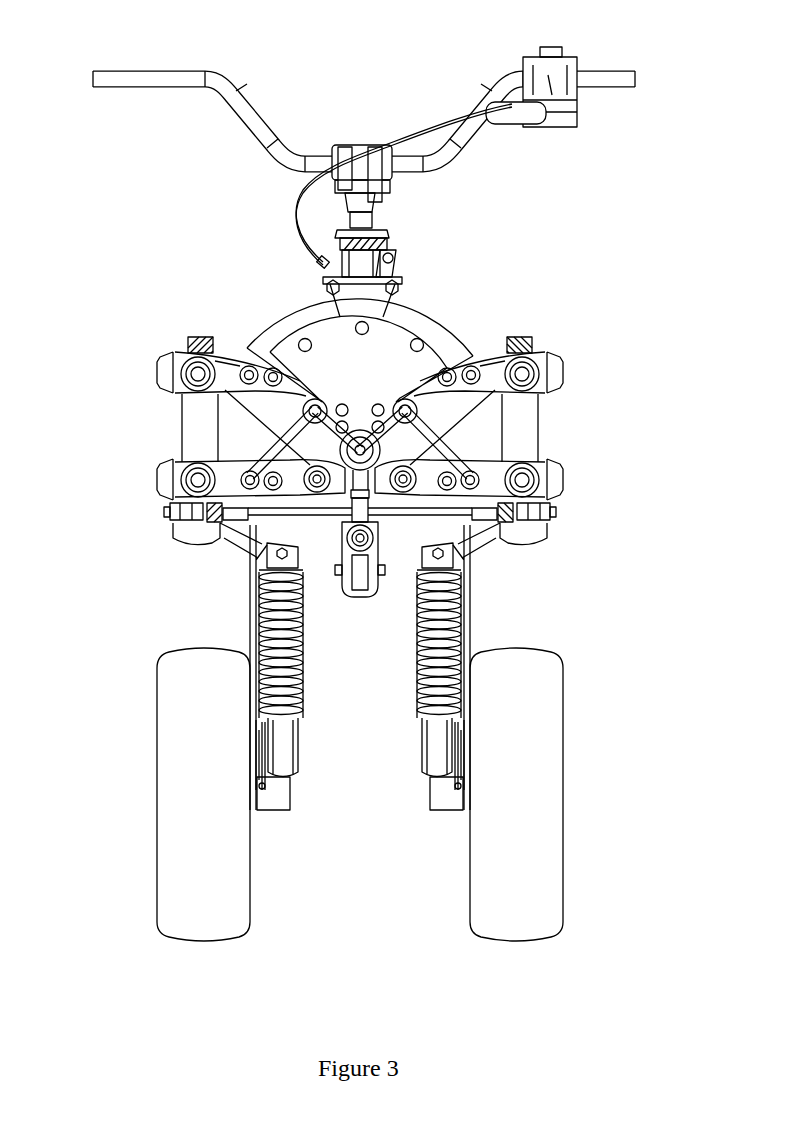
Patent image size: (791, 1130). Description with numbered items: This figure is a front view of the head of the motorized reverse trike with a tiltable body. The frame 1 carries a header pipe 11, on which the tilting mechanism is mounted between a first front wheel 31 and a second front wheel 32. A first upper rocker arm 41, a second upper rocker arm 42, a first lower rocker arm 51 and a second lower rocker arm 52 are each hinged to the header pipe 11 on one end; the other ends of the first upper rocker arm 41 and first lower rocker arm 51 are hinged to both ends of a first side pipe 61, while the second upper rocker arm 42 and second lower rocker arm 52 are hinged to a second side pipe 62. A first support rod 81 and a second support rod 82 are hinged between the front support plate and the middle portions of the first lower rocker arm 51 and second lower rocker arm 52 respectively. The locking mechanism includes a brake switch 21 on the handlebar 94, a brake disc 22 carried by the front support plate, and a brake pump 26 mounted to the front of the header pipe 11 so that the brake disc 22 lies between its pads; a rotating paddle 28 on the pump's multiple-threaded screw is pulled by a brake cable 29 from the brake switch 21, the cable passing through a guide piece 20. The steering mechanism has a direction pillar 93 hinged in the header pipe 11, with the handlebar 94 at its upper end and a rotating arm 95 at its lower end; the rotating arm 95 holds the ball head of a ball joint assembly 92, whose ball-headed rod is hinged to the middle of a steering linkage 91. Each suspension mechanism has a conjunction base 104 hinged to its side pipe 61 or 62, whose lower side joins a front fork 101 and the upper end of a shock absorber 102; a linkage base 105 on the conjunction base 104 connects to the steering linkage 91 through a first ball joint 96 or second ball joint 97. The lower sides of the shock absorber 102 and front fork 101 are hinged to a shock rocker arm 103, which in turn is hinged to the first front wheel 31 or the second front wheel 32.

The handlebar 94 is at (253, 108).
The brake cable 29 is at (412, 130).
The brake switch 21 is at (560, 115).
The direction pillar 93 is at (363, 227).
The header pipe 11 is at (357, 265).
The rotating paddle 28 is at (380, 265).
The brake pump 26 is at (360, 297).
The brake disc 22 is at (398, 345).
The guide piece 20 is at (323, 262).
The first upper rocker arm 41 is at (190, 350).
The second upper rocker arm 42 is at (497, 372).
The frame 1 is at (198, 430).
The first side pipe 61 is at (268, 438).
The second side pipe 62 is at (445, 428).
The first support rod 81 is at (292, 446).
The second support rod 82 is at (440, 448).
The first lower rocker arm 51 is at (228, 476).
The second lower rocker arm 52 is at (498, 478).
The steering linkage 91 is at (165, 480).
The first ball joint 96 is at (200, 510).
The second ball joint 97 is at (522, 512).
The linkage base 105 is at (187, 522).
The conjunction base 104 is at (240, 537).
The front fork 101 is at (272, 622).
The shock absorber 102 is at (250, 653).
The shock rocker arm 103 is at (277, 793).
The first front wheel 31 is at (203, 813).
The second front wheel 32 is at (520, 813).
The ball joint assembly 92 is at (355, 600).
The rotating arm 95 is at (367, 598).